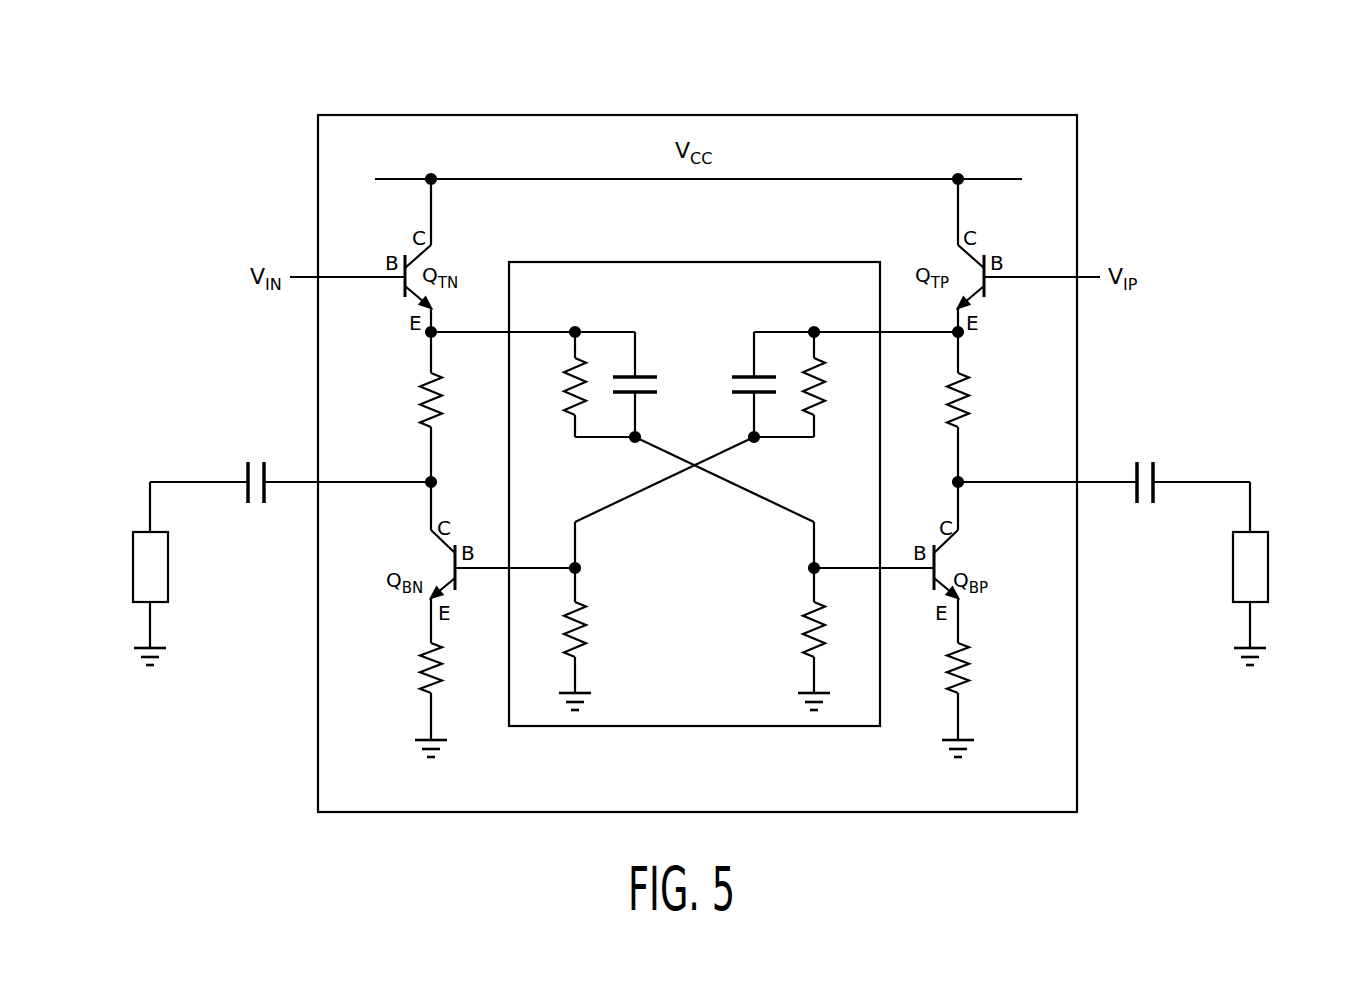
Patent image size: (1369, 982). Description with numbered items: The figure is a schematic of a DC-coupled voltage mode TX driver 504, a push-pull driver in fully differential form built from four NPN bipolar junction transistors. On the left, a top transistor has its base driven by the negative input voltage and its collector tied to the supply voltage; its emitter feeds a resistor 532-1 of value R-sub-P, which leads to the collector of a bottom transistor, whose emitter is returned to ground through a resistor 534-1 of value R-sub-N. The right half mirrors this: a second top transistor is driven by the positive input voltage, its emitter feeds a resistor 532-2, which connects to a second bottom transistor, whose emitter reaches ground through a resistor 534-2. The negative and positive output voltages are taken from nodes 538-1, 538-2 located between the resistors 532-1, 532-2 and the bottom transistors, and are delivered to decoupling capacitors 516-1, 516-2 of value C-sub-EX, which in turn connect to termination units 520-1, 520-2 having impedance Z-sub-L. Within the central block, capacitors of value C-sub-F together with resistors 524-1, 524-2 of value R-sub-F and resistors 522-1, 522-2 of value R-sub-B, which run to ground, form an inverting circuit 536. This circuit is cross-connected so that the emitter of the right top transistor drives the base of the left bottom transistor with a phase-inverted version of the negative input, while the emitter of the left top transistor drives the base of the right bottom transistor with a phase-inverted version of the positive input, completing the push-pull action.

The DC-coupled voltage mode TX driver 504 is at (975, 115).
The inverting circuit 536 is at (722, 262).
The decoupling capacitor 516-1 is at (245, 472).
The decoupling capacitor 516-2 is at (1157, 472).
The termination unit / capacitor 520-1 is at (643, 396).
The termination unit / capacitor 520-2 is at (746, 376).
The resistor 522-1 is at (586, 633).
The resistor 522-2 is at (804, 633).
The resistor 524-1 is at (567, 400).
The resistor 524-2 is at (820, 400).
The resistor 532-1 is at (418, 406).
The resistor 532-2 is at (970, 400).
The resistor 534-1 is at (419, 675).
The resistor 534-2 is at (947, 675).
The node 538-1 is at (428, 488).
The node 538-2 is at (962, 488).